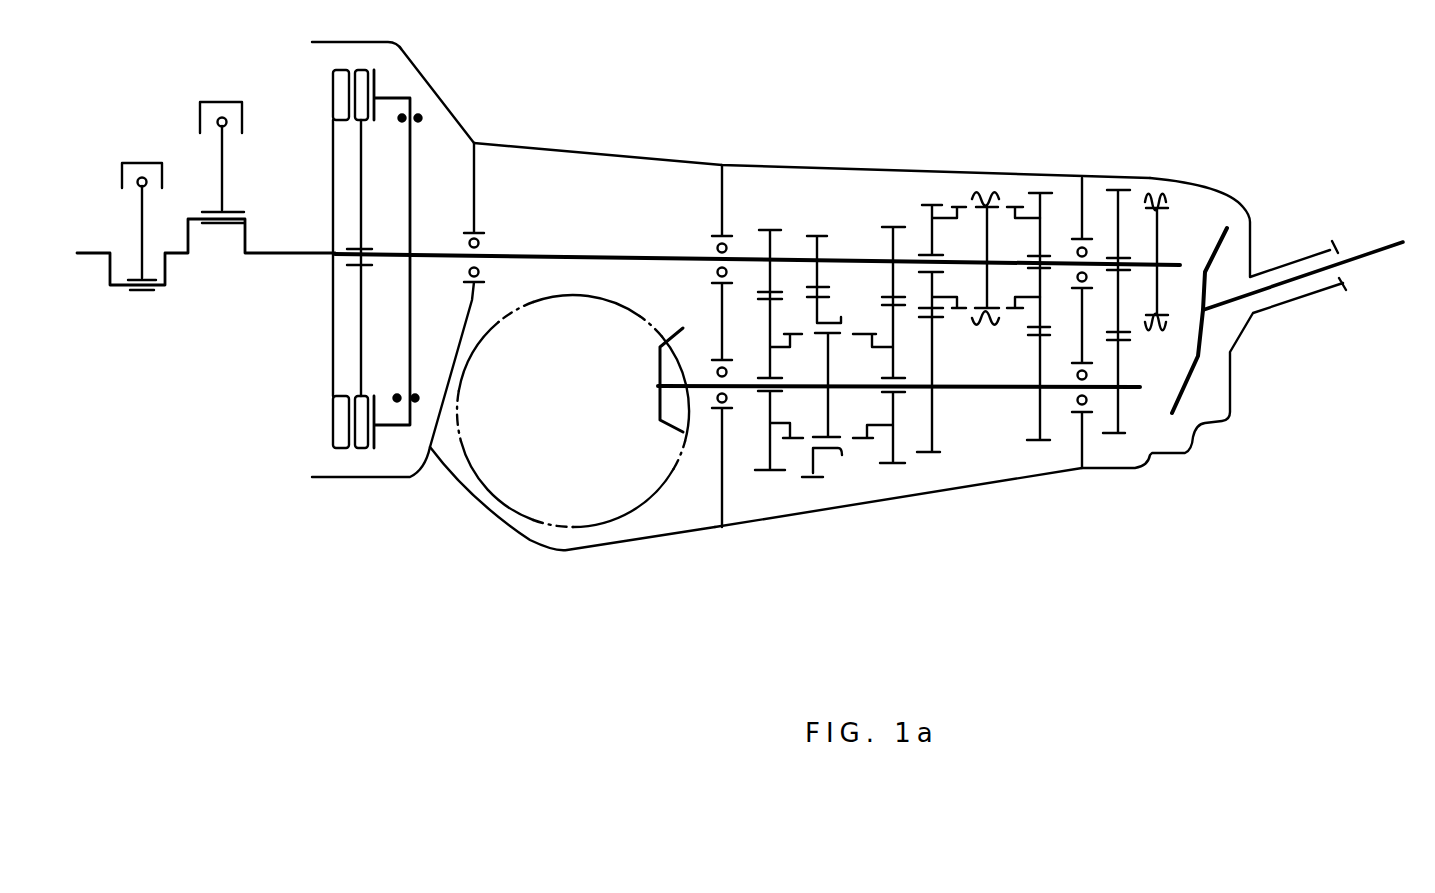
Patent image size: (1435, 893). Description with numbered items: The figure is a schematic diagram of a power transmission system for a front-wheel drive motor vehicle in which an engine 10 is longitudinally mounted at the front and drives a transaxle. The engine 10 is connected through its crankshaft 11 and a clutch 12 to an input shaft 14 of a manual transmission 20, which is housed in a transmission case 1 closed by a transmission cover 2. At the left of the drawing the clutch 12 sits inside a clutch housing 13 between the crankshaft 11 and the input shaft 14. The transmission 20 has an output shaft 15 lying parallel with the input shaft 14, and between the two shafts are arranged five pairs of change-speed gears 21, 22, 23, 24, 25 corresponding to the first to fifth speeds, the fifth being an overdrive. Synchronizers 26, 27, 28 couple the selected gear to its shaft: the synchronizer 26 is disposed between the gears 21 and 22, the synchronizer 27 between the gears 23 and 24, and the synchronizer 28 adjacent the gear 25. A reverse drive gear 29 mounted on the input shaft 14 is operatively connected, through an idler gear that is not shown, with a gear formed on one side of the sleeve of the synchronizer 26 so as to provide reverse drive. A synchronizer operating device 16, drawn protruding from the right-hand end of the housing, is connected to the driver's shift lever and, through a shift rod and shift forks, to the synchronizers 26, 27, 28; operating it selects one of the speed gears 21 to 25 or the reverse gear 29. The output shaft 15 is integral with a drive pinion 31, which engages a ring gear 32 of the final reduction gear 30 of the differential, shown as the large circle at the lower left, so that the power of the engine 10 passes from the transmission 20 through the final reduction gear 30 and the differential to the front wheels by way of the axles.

The transmission case 1 is at (633, 153).
The transmission cover 2 is at (1250, 220).
The engine 10 is at (156, 122).
The crankshaft 11 is at (278, 258).
The clutch 12 is at (337, 84).
The clutch housing 13 is at (353, 64).
The input shaft 14 is at (634, 257).
The output shaft 15 is at (973, 388).
The synchronizer operating device 16 is at (1188, 383).
The transmission 20 is at (866, 193).
The first speed gear 21 is at (780, 228).
The second speed gear 22 is at (889, 226).
The third speed gear 23 is at (931, 192).
The fourth speed gear 24 is at (1041, 183).
The fifth speed gear 25 is at (1121, 183).
The synchronizer 26 is at (827, 460).
The synchronizer 27 is at (990, 187).
The synchronizer 28 is at (1158, 180).
The reverse drive gear 29 is at (816, 233).
The final reduction gear 30 is at (660, 493).
The drive pinion 31 is at (671, 430).
The ring gear 32 is at (518, 515).